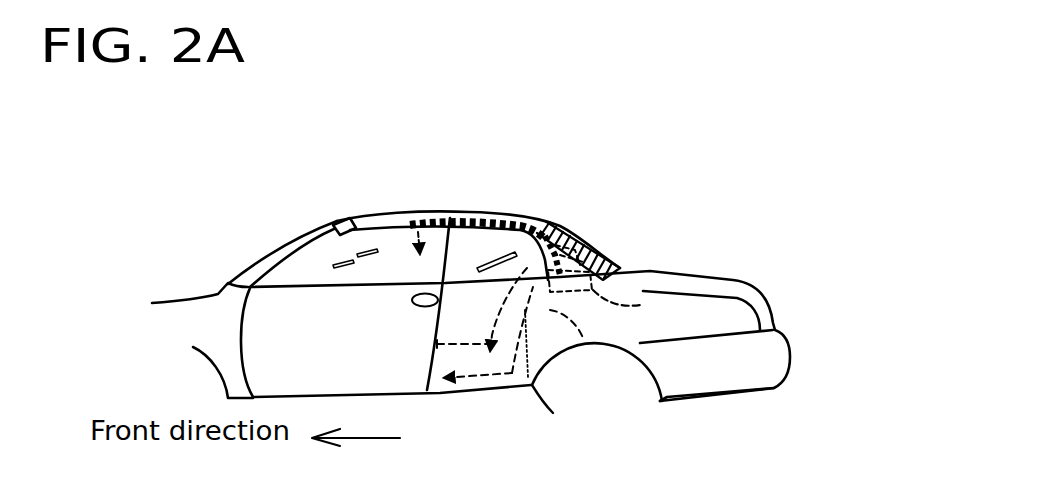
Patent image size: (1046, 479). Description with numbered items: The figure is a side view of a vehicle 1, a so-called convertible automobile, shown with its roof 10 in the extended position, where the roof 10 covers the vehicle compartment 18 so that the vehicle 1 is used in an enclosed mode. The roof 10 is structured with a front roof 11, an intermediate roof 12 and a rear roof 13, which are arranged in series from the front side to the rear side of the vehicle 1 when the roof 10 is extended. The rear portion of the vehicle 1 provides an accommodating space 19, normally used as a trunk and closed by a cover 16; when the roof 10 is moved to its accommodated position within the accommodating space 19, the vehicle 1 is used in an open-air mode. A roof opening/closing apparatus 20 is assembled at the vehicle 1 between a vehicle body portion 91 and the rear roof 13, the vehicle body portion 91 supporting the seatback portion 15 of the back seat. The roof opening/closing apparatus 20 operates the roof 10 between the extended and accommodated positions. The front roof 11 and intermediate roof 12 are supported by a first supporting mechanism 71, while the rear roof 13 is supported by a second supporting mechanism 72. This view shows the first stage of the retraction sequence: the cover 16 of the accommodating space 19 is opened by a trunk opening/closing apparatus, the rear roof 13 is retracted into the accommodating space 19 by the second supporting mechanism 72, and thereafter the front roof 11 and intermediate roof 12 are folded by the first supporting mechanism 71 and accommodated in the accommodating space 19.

The vehicle 1 is at (254, 236).
The roof 10 is at (508, 204).
The front roof 11 is at (390, 218).
The intermediate roof 12 is at (470, 212).
The rear roof 13 is at (575, 237).
The seatback portion 15 is at (557, 417).
The cover 16 is at (687, 273).
The vehicle compartment 18 is at (415, 217).
The accommodating space 19 is at (706, 311).
The roof opening/closing apparatus 20 is at (595, 335).
The first supporting mechanism 71 is at (565, 222).
The second supporting mechanism 72 is at (623, 291).
The vehicle body portion 91 is at (560, 340).